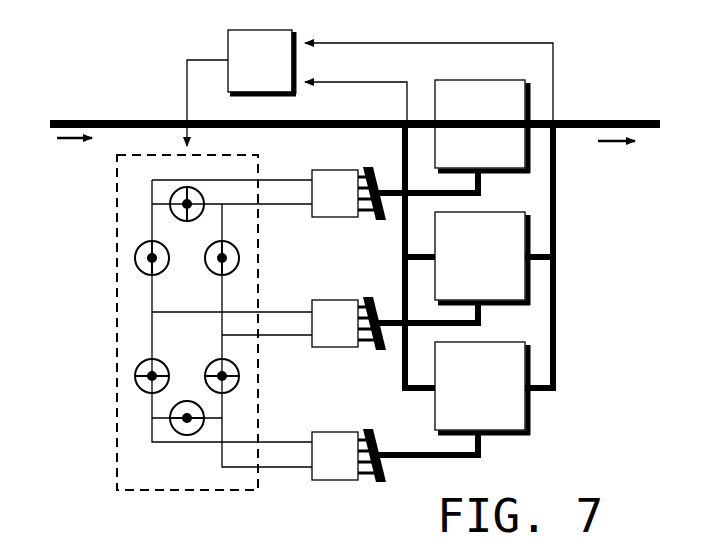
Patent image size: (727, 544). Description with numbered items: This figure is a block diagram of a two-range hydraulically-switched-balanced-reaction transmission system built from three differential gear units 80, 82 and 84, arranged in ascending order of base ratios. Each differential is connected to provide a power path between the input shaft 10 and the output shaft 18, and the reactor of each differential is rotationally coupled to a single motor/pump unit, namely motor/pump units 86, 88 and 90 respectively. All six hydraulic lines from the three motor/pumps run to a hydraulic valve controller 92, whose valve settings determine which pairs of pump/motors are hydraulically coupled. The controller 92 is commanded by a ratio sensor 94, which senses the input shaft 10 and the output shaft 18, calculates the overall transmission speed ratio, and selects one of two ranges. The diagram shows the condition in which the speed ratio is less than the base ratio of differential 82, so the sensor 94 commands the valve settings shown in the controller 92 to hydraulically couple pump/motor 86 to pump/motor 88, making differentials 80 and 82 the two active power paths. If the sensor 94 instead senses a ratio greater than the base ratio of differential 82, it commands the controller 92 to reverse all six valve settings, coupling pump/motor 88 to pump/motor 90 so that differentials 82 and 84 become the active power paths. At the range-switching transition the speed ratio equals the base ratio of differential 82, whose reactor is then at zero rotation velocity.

The input shaft 10 is at (106, 120).
The output shaft 18 is at (608, 121).
The differential gear unit 80 is at (530, 102).
The differential gear unit 82 is at (530, 230).
The differential gear unit 84 is at (530, 362).
The motor/pump unit 86 is at (348, 170).
The motor/pump unit 88 is at (348, 300).
The motor/pump unit 90 is at (348, 432).
The hydraulic valve controller 92 is at (117, 300).
The ratio sensor 94 is at (228, 46).